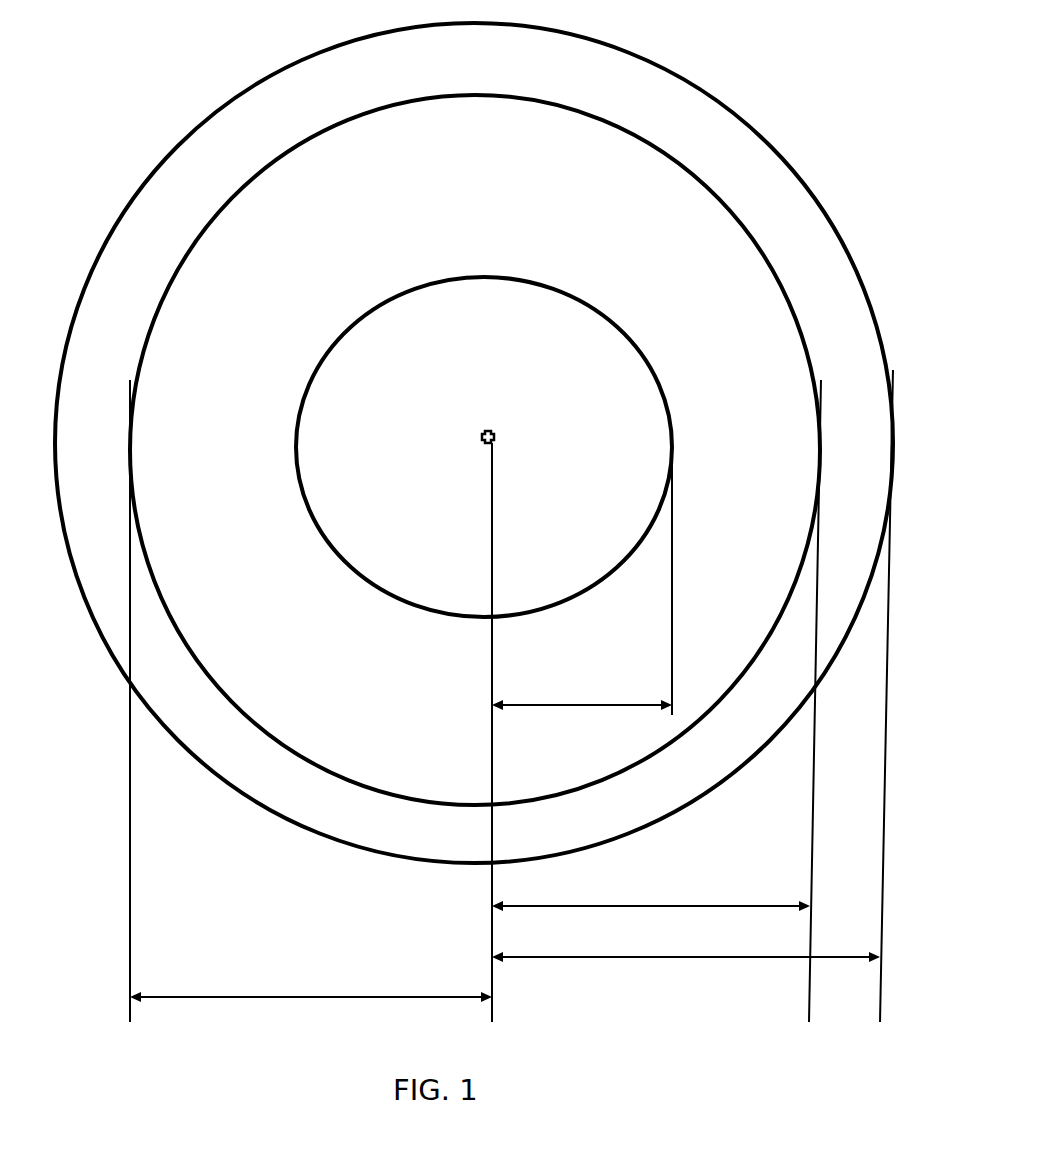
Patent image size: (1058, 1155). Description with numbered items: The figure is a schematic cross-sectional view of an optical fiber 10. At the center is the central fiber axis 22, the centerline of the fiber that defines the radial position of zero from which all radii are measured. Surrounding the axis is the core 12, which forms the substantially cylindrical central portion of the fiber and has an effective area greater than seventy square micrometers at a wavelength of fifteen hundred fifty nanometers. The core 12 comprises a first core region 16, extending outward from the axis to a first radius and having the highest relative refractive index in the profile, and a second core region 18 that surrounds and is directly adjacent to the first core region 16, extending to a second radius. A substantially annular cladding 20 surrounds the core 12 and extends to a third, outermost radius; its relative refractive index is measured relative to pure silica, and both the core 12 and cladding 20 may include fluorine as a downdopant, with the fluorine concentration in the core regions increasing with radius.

The optical fiber 10 is at (473, 522).
The core 12 is at (311, 701).
The first core region 16 is at (429, 333).
The second core region 18 is at (320, 177).
The cladding 20 is at (205, 186).
The central fiber axis 22 is at (488, 431).